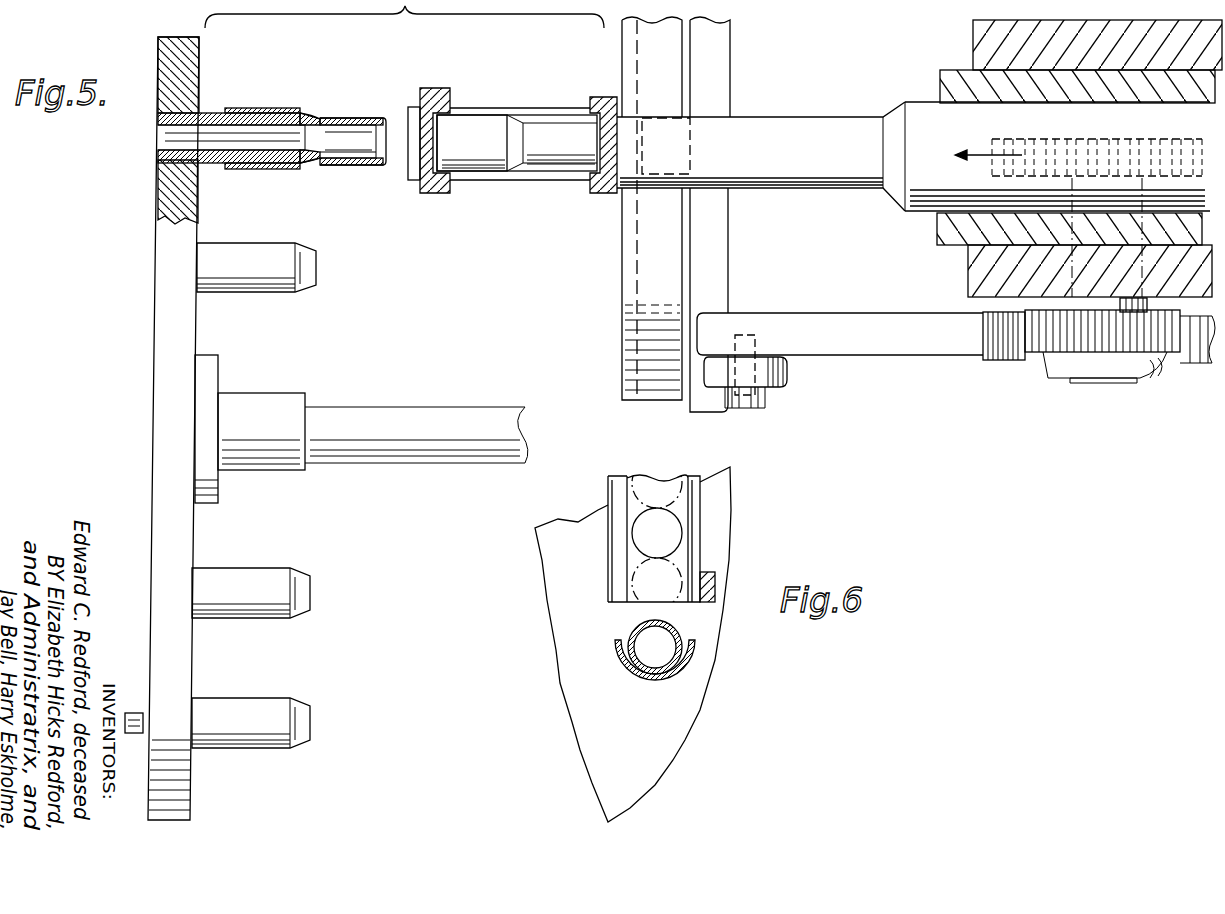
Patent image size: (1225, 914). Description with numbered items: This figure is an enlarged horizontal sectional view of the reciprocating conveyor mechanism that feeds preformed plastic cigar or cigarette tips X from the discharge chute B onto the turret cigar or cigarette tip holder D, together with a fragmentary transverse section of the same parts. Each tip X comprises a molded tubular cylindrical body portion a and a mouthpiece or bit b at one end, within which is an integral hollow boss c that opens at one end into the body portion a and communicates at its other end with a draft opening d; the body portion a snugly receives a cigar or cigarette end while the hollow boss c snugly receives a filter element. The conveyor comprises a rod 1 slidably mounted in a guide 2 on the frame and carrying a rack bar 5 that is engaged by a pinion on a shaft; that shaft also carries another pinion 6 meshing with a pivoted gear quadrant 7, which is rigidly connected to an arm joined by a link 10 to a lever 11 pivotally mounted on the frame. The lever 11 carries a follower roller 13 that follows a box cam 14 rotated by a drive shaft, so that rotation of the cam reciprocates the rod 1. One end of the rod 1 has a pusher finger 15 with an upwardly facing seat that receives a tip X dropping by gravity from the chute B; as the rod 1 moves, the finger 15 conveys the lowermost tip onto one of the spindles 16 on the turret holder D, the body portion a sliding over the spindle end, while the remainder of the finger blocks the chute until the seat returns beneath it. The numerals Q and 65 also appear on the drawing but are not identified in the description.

In FIG. 5, the rod 1 is at (838, 128).
In FIG. 5, the guide 2 is at (948, 72).
In FIG. 5, the rack bar 5 is at (1097, 140).
In FIG. 5, the pinion 6 is at (1040, 357).
In FIG. 5, the gear quadrant 7 is at (995, 361).
In FIG. 5, the link 10 is at (790, 375).
In FIG. 5, the lever 11 is at (717, 262).
In FIG. 5, the follower roller 13 is at (662, 117).
In FIG. 5, the box cam 14 is at (636, 288).
In FIG. 5, the pusher finger 15 is at (553, 115).
In FIG. 6, the pusher finger 15 is at (688, 667).
In FIG. 5, the spindles 16 is at (265, 170).
In FIG. 5, the lug 65 is at (138, 733).
In FIG. 5, the body portion a is at (258, 108).
In FIG. 5, the mouthpiece b is at (345, 165).
In FIG. 5, the hollow boss c is at (350, 118).
In FIG. 5, the draft opening d is at (385, 140).
In FIG. 5, the discharge chute B is at (590, 193).
In FIG. 6, the discharge chute B is at (714, 520).
In FIG. 5, the turret cigar or cigarette tip holder D is at (150, 270).
In FIG. 6, the turret cigar or cigarette tip holder D is at (684, 738).
In FIG. 5, the shaft Q is at (387, 410).
In FIG. 5, the cigar or cigarette tip X is at (320, 108).
In FIG. 6, the cigar or cigarette tip X is at (621, 632).